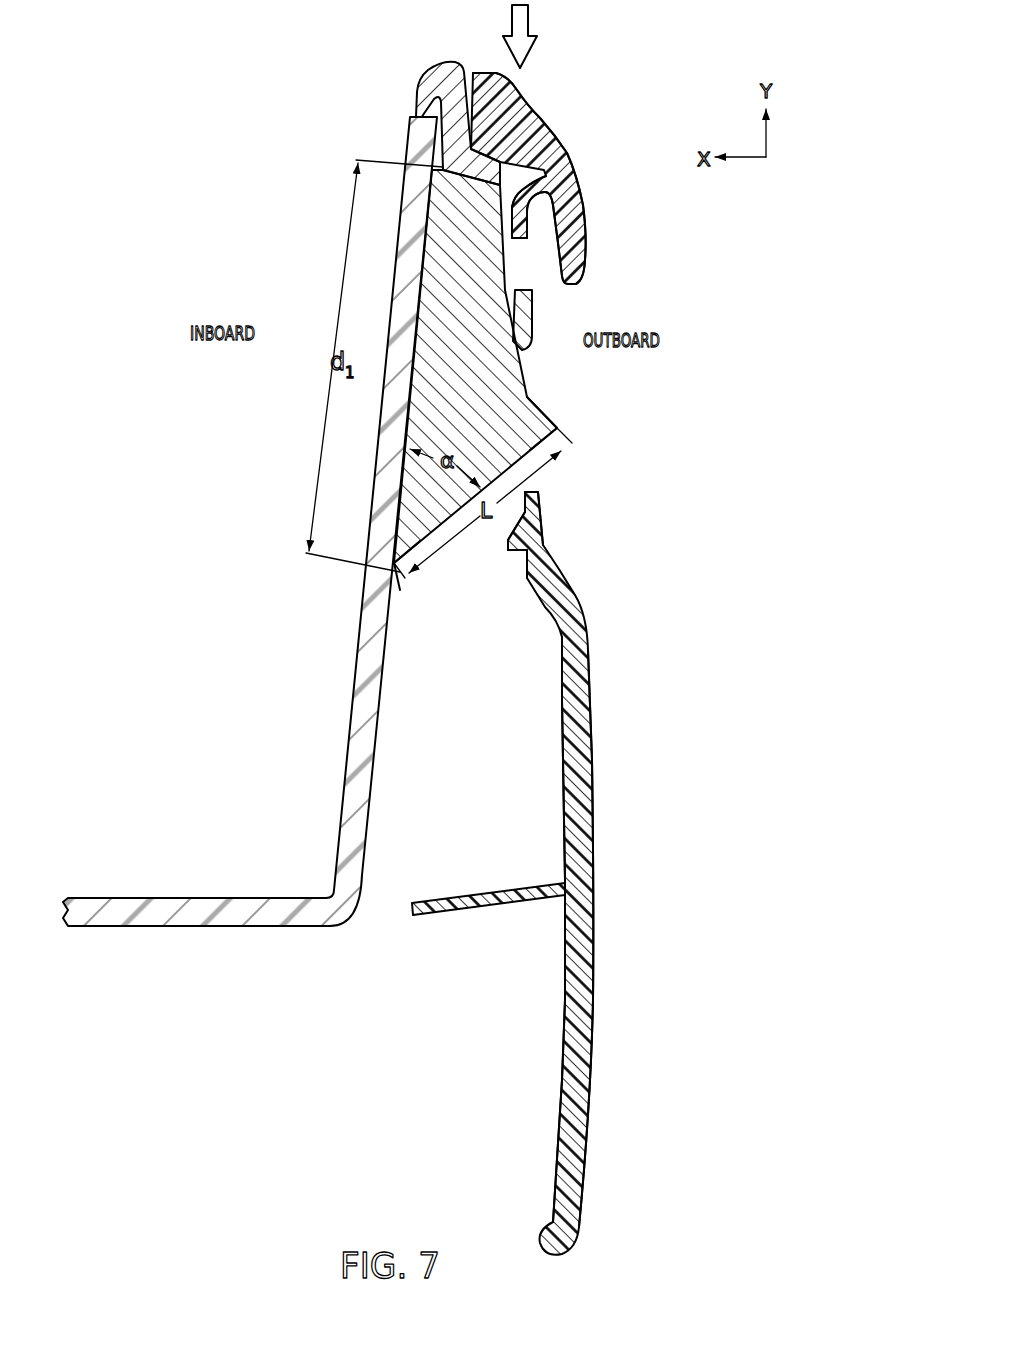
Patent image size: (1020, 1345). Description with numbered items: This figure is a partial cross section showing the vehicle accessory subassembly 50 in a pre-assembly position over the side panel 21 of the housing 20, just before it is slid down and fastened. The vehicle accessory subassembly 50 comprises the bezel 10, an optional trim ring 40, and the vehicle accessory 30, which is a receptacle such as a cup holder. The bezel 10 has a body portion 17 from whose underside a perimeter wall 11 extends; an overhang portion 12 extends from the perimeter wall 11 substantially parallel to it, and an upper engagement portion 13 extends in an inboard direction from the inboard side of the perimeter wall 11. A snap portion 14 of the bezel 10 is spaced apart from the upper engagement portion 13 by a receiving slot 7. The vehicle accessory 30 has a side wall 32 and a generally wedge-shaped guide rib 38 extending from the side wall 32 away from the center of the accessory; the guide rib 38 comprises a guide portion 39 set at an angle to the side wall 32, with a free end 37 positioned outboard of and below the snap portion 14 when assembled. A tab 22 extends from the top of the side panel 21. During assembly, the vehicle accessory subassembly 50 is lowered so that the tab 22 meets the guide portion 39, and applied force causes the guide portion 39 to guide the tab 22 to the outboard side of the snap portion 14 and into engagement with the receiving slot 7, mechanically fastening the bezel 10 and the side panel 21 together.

The receiving slot 7 is at (554, 290).
The bezel 10 is at (590, 107).
The perimeter wall 11 is at (557, 152).
The overhang portion 12 is at (577, 238).
The upper engagement portion 13 is at (523, 207).
The snap portion 14 is at (526, 307).
The body portion 17 is at (489, 73).
The housing 20 is at (643, 727).
The side panel 21 is at (582, 670).
The tab 22 is at (538, 524).
The vehicle accessory 30 is at (342, 482).
The side wall 32 is at (416, 147).
The free end 37 is at (560, 430).
The guide rib 38 is at (440, 273).
The guide portion 39 is at (452, 518).
The trim ring 40 is at (434, 83).
The vehicle accessory subassembly 50 is at (402, 98).